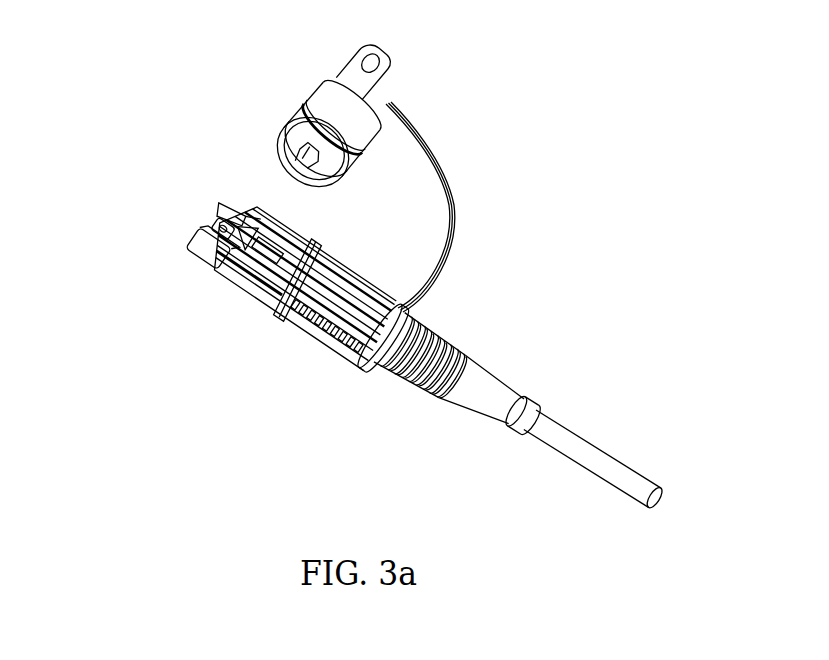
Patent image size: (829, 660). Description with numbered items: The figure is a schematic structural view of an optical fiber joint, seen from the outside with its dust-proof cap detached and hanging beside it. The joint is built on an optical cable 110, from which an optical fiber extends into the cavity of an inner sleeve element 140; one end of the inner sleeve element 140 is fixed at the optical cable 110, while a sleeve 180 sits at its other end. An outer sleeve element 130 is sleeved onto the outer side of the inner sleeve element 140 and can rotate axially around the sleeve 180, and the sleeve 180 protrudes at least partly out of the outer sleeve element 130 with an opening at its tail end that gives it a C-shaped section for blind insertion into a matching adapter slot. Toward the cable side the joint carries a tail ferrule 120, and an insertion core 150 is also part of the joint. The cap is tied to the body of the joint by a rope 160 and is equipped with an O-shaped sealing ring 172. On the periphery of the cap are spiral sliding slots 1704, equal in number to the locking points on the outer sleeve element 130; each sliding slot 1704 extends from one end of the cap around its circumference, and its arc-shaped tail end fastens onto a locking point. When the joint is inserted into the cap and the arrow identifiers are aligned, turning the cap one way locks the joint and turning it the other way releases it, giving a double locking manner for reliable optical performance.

The optical cable 110 is at (582, 443).
The tail ferrule 120 is at (463, 373).
The outer sleeve element 130 is at (303, 323).
The inner sleeve element 140 is at (213, 248).
The insertion core 150 is at (223, 215).
The sleeve 180 is at (220, 222).
The rope 160 is at (445, 165).
The O-shaped sealing ring 172 is at (299, 101).
The sliding slot 1704 is at (305, 128).